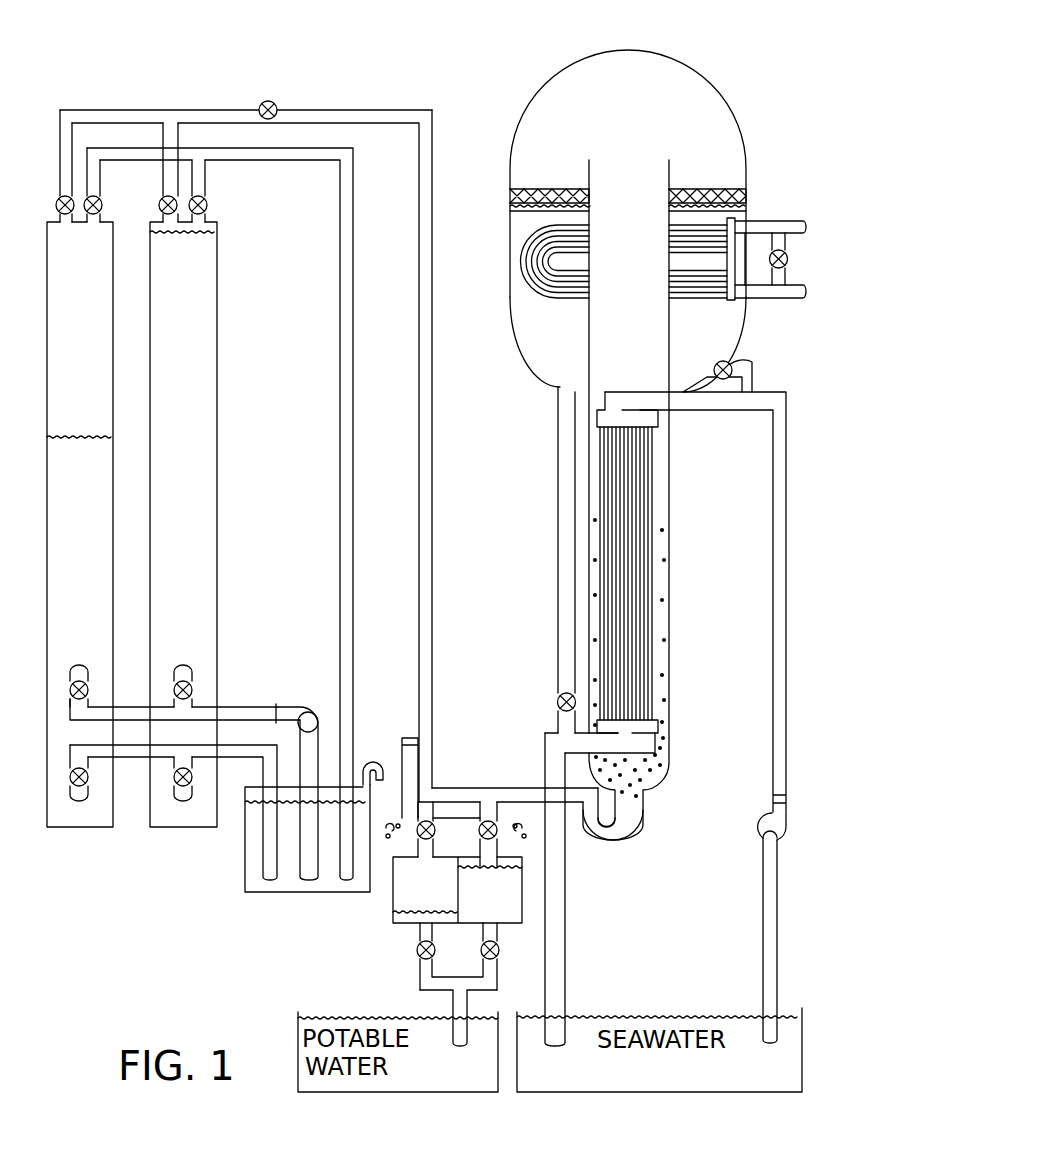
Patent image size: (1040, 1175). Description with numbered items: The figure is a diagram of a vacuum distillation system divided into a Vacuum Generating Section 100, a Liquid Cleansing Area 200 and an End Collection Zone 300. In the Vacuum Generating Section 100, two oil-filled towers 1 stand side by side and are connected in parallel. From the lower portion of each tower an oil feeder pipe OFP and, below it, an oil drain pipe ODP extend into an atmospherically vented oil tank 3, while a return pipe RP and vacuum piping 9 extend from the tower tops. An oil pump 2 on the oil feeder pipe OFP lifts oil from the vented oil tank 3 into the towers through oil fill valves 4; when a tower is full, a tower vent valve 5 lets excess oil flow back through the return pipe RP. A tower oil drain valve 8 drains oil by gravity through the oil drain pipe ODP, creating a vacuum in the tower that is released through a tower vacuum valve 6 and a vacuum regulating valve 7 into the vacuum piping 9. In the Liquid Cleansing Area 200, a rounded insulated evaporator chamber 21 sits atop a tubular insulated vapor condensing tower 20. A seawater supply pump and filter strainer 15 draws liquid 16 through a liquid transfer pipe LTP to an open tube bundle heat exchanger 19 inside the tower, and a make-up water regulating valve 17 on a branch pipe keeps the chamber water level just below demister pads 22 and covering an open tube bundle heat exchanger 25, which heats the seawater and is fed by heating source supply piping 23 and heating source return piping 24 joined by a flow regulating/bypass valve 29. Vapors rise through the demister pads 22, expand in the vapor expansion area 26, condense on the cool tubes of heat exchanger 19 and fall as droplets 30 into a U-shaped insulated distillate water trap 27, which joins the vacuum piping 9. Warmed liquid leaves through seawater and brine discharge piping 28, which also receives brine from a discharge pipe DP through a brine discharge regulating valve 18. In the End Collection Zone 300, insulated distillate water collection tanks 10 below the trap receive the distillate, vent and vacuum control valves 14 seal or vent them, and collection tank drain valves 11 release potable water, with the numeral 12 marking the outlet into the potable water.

The oil-filled towers 1 is at (217, 493).
The oil pump 2 is at (300, 707).
The vented oil tank 3 is at (243, 872).
The oil fill valves 4 is at (73, 681).
The tower vent valve 5 is at (208, 206).
The tower vacuum valve 6 is at (60, 197).
The vacuum regulating valve 7 is at (266, 101).
The tower oil drain valve 8 is at (72, 786).
The vacuum piping 9 is at (432, 492).
The insulated distillate water collection tanks 10 is at (393, 910).
The collection tank drain valve 11 is at (418, 952).
The potable water outlet pipe 12 is at (457, 1046).
The vent and vacuum control valves 14 is at (390, 826).
The seawater supply pump and filter strainer 15 is at (760, 832).
The liquid 16 is at (770, 1045).
The make-up water regulating valve 17 is at (753, 368).
The brine discharge regulating valve 18 is at (557, 702).
The open tube bundle heat exchanger 19 is at (655, 487).
The insulated vapor condensing tower 20 is at (669, 565).
The insulated evaporator chamber 21 is at (536, 92).
The demister pads 22 is at (536, 188).
The heating source supply piping 23 is at (793, 221).
The heating source return piping 24 is at (795, 299).
The open tube bundle heat exchanger 25 is at (522, 262).
The vapor expansion area 26 is at (660, 73).
The insulated distillate water trap 27 is at (645, 806).
The seawater and brine discharge piping 28 is at (566, 1044).
The flow regulating/bypass valve 29 is at (773, 268).
The droplets 30 is at (668, 700).
The Vacuum Generating Section 100 is at (312, 382).
The Liquid Cleansing Area 200 is at (750, 38).
The End Collection Zone 300 is at (324, 958).
The return pipe RP is at (340, 598).
The oil feeder pipe OFP is at (228, 706).
The oil drain pipe ODP is at (243, 758).
The discharge pipe DP is at (558, 598).
The liquid transfer pipe LTP is at (773, 620).